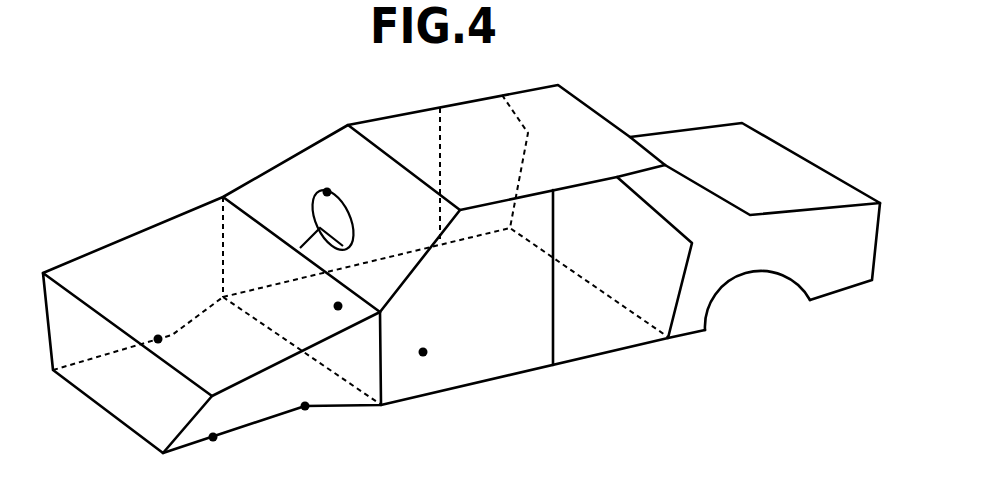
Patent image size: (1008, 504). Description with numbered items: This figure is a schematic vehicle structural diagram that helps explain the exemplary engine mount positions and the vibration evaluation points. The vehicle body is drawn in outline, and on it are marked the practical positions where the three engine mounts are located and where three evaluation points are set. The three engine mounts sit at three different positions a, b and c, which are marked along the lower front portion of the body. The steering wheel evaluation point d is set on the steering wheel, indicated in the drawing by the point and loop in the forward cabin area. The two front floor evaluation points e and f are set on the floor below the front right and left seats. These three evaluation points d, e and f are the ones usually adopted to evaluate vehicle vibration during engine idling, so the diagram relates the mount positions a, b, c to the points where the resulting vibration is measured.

The engine mount position a is at (240, 455).
The engine mount position b is at (337, 422).
The engine mount position c is at (151, 321).
The steering wheel evaluation point d is at (335, 209).
The front floor evaluation point e is at (300, 311).
The front floor evaluation point f is at (432, 337).